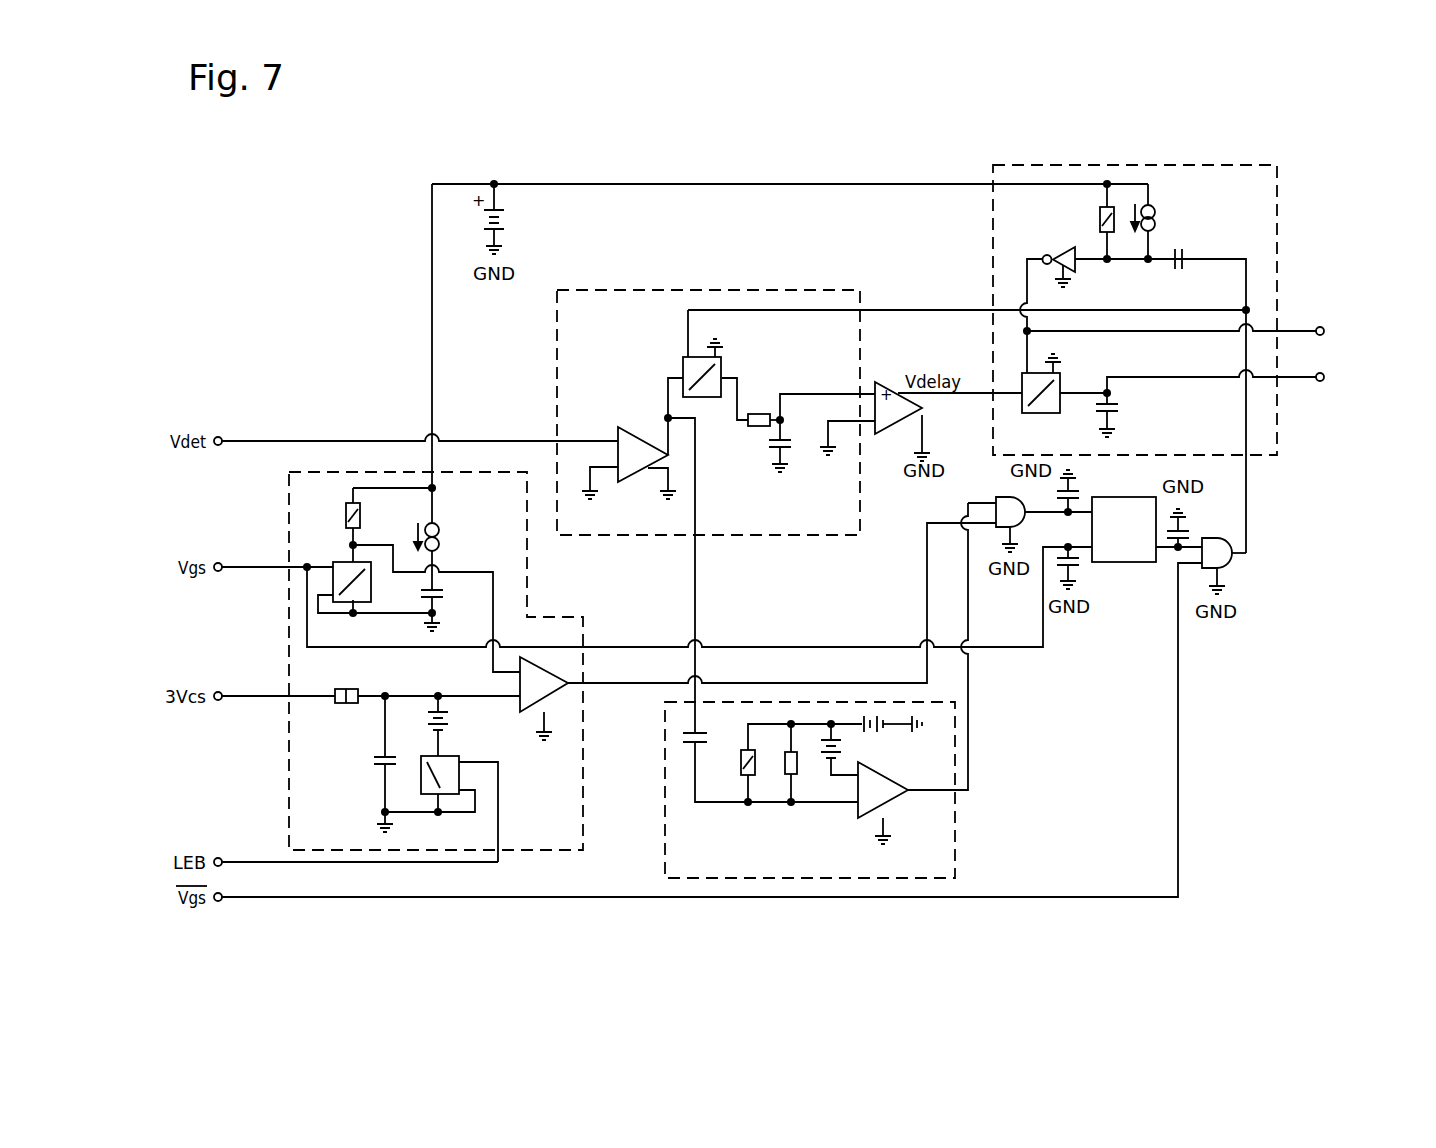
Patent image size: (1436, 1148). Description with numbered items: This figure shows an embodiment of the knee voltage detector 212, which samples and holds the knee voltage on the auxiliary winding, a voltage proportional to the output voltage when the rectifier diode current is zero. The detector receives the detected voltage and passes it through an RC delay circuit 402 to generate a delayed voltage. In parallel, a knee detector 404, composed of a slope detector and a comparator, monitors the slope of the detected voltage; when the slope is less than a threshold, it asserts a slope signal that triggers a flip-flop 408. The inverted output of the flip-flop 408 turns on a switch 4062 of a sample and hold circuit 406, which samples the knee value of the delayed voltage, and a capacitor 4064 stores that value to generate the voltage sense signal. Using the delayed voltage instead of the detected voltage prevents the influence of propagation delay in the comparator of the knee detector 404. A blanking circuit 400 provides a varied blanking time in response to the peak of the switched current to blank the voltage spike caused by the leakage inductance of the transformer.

The knee voltage detector 212 is at (1320, 177).
The blanking circuit 400 is at (556, 616).
The RC delay circuit 402 is at (703, 290).
The knee detector 404 is at (955, 830).
The sample and hold circuit 406 is at (993, 247).
The flip-flop 408 is at (1122, 562).
The switch 4062 is at (1022, 407).
The capacitor 4064 is at (1132, 407).